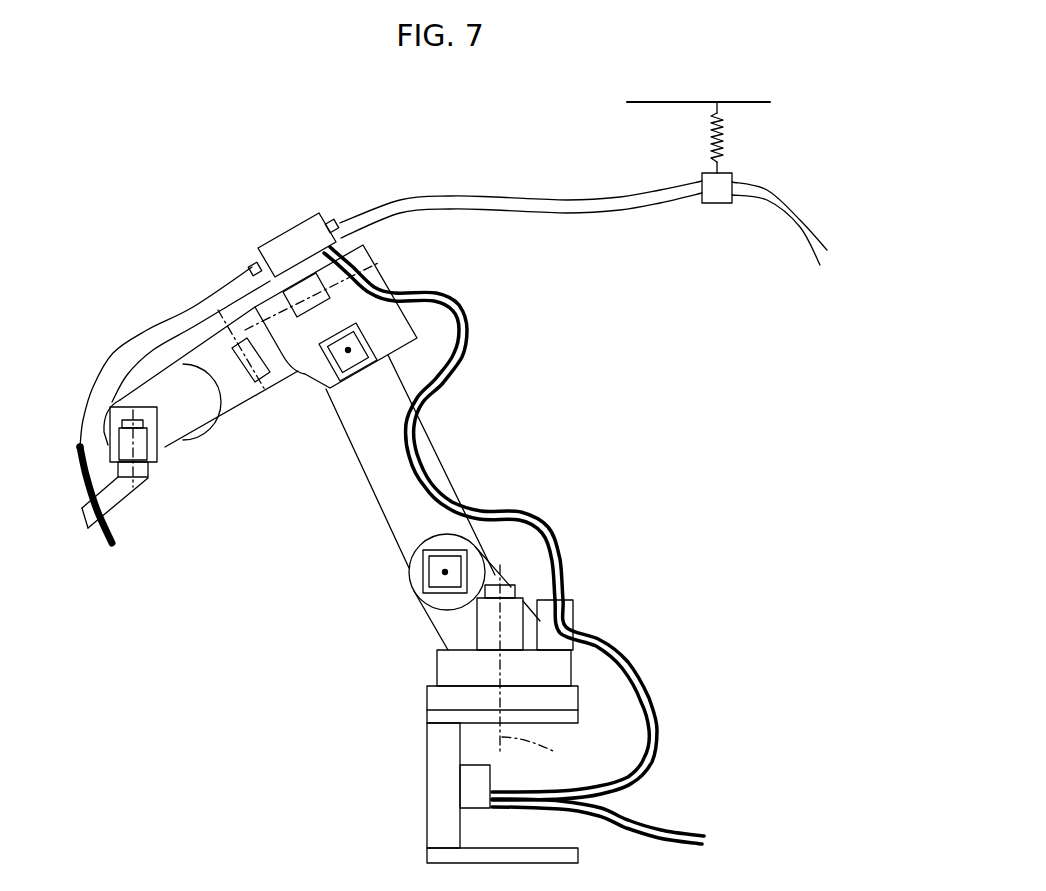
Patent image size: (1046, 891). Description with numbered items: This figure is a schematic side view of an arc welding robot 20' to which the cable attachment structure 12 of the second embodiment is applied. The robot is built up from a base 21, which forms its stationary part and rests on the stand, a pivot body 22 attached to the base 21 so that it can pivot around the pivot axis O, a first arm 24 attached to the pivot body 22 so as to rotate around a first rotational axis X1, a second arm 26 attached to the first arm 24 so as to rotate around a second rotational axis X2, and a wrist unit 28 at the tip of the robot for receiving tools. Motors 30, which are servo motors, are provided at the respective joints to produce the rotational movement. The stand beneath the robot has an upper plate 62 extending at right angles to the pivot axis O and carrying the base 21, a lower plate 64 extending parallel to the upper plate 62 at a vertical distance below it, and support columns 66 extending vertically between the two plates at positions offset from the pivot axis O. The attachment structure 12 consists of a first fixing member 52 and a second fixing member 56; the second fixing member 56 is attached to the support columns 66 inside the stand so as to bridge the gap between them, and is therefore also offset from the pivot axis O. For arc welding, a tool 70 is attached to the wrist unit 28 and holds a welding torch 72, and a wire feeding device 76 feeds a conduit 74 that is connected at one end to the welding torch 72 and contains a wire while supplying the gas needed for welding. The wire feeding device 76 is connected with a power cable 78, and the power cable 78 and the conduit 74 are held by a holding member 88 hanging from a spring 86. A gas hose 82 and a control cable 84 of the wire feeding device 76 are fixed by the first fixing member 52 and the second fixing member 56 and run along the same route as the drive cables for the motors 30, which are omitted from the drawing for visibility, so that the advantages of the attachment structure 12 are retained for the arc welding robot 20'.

The attachment structure 12 is at (648, 627).
The arc welding robot 20' is at (501, 353).
The base 21 is at (433, 686).
The pivot body 22 is at (430, 622).
The first arm 24 is at (372, 492).
The second arm 26 is at (380, 276).
The wrist unit 28 is at (168, 480).
The motors 30 is at (245, 384).
The first fixing member 52 is at (573, 618).
The second fixing member 56 is at (460, 800).
The upper plate 62 is at (427, 712).
The lower plate 64 is at (427, 856).
The support columns 66 is at (427, 778).
The tool 70 is at (127, 497).
The welding torch 72 is at (97, 540).
The conduit 74 is at (188, 310).
The wire feeding device 76 is at (290, 212).
The power cable 78 is at (576, 213).
The gas hose 82 is at (490, 510).
The control cable 84 is at (548, 547).
The spring 86 is at (745, 143).
The holding member 88 is at (715, 205).
The first rotational axis X1 is at (444, 572).
The second rotational axis X2 is at (348, 351).
The pivot axis O is at (544, 750).